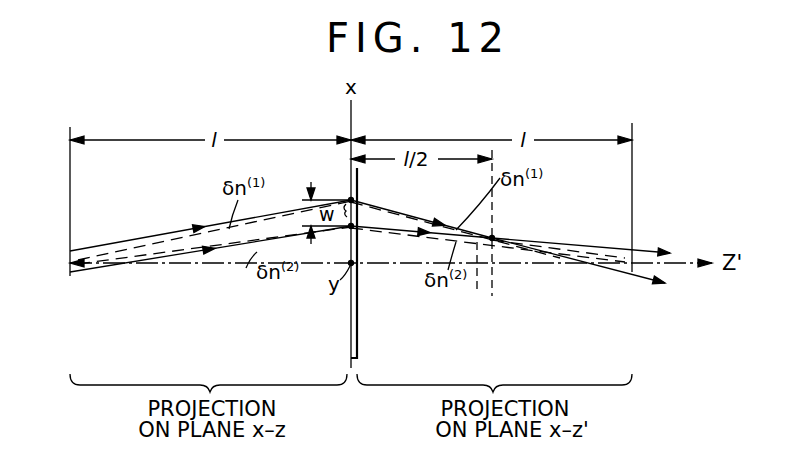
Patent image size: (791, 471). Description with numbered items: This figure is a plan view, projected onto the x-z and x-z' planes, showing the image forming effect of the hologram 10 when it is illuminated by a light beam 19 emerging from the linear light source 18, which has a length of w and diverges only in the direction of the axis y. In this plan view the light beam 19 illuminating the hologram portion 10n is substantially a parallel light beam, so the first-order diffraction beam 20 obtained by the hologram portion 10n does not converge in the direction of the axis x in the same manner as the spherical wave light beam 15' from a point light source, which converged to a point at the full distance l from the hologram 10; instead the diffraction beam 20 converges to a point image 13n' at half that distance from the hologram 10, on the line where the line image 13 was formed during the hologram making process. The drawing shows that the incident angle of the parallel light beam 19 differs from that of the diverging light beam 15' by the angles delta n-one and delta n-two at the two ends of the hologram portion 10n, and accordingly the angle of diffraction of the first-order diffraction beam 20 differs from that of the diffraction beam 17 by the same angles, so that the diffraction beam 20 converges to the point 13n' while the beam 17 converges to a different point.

The hologram 10 is at (358, 182).
The hologram portion 10n is at (347, 199).
The line image 13 is at (497, 272).
The point image 13n' is at (529, 220).
The spherical wave light beam 15' is at (210, 265).
The diffraction beam 17 is at (474, 301).
The linear light source 18 is at (70, 263).
The light beam 19 is at (144, 239).
The first-order diffraction beam 20 is at (418, 224).